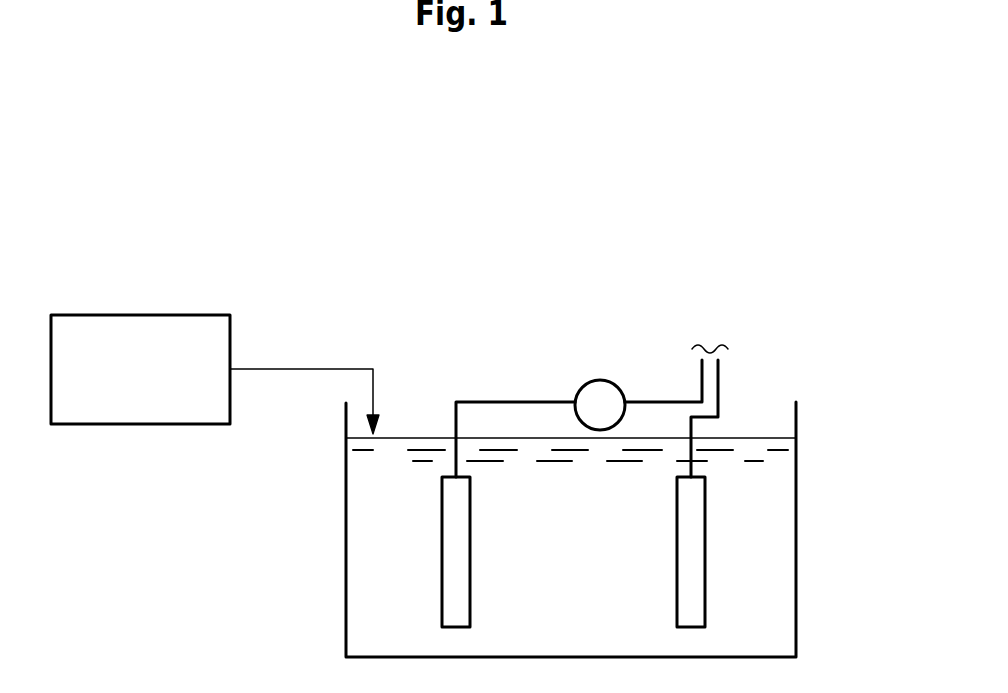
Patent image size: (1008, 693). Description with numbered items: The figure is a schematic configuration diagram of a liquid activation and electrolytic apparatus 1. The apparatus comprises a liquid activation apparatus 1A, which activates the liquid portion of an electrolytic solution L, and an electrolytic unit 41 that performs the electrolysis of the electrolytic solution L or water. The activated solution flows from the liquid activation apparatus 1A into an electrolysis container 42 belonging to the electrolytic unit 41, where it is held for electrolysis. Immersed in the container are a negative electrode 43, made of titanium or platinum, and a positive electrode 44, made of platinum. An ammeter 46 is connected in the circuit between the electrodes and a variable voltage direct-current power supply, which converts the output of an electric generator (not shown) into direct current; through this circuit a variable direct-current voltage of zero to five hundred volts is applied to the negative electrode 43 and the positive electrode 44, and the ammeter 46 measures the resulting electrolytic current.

The liquid activation and electrolytic apparatus 1 is at (581, 332).
The liquid activation apparatus 1A is at (190, 426).
The electrolytic solution L is at (402, 452).
The electrolytic unit 41 is at (792, 384).
The electrolysis container 42 is at (797, 470).
The negative electrode 43 is at (470, 553).
The positive electrode 44 is at (705, 553).
The ammeter 46 is at (610, 381).